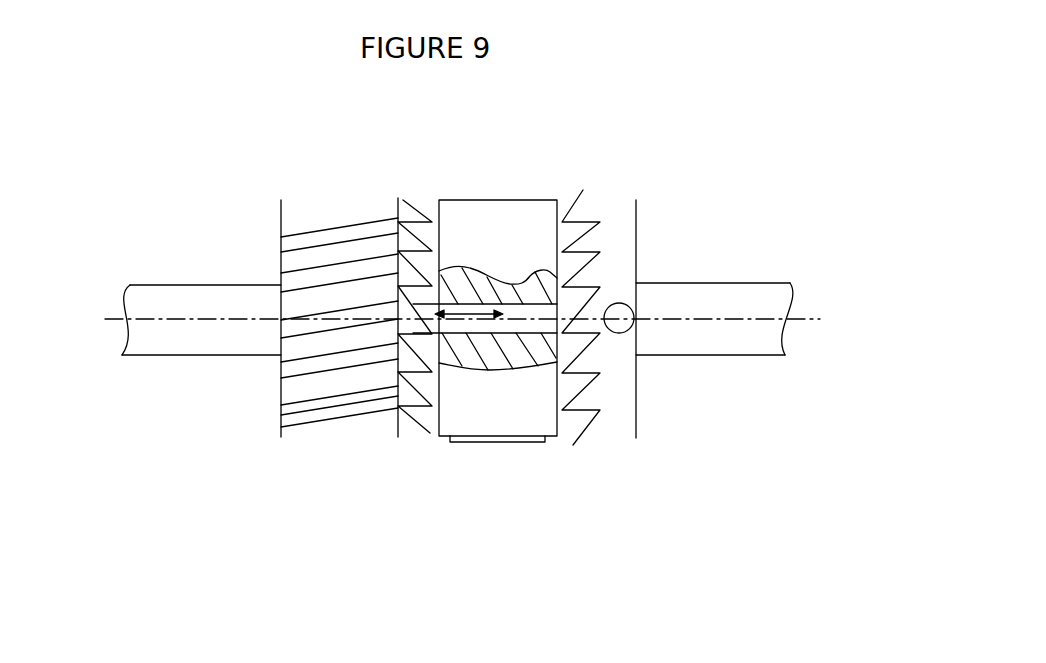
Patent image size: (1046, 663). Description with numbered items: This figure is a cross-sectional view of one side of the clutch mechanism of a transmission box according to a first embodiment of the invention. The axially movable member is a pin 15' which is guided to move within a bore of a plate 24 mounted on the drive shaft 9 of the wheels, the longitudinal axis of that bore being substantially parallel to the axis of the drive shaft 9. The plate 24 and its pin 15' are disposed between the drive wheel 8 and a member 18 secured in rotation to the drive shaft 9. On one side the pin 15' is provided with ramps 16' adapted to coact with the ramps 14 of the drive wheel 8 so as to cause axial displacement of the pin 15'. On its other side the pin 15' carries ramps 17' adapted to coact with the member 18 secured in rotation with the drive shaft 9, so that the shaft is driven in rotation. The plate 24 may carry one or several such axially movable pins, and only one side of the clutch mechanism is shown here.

The drive wheel 8 is at (310, 218).
The drive shaft 9 is at (748, 297).
The ramps 14 is at (413, 270).
The pin 15' is at (525, 209).
The ramps 16' is at (379, 360).
The ramps 17' is at (621, 359).
The member secured in rotation to the shaft 18 is at (615, 267).
The plate 24 is at (483, 402).